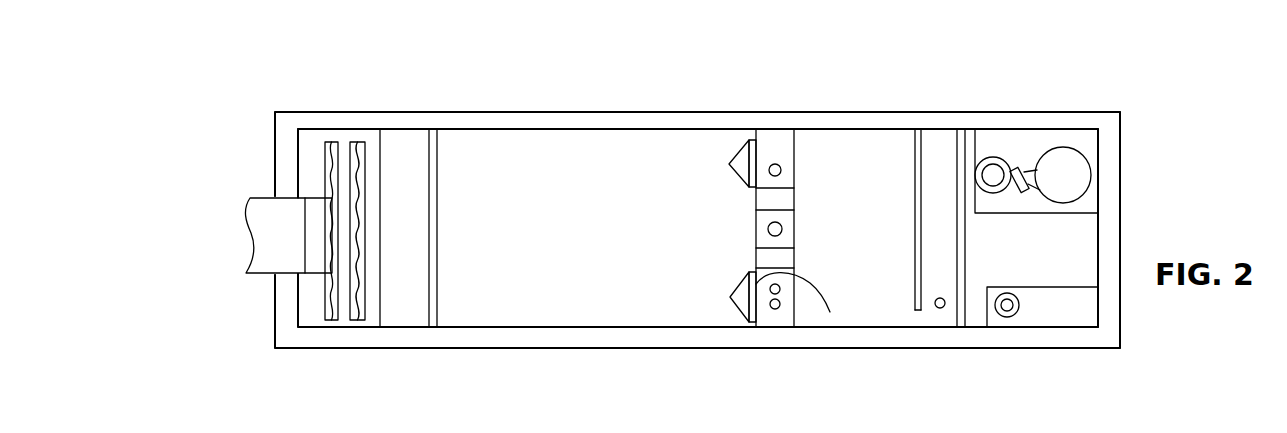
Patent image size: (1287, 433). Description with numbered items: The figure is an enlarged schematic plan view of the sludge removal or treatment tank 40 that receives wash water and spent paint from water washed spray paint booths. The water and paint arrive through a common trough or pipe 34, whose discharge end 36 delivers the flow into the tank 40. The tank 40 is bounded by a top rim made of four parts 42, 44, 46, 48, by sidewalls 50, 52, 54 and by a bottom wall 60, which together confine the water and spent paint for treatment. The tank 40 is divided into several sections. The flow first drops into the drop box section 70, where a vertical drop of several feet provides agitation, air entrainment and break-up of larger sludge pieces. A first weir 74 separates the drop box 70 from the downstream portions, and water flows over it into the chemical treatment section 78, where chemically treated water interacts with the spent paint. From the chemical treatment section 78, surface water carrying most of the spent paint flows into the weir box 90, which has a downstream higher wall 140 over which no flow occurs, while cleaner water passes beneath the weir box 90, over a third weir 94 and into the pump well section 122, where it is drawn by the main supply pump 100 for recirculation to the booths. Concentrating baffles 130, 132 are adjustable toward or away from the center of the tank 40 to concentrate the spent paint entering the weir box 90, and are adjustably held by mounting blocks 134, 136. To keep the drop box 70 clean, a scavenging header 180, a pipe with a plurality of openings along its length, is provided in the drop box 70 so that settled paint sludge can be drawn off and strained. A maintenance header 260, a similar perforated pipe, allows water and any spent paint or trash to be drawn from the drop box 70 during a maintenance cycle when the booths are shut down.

The common trough or pipe 34 is at (288, 235).
The discharge end 36 is at (322, 217).
The sludge removal or treatment tank 40 is at (955, 350).
The top rim part 42 is at (292, 323).
The top rim part 44 is at (408, 343).
The top rim part 46 is at (598, 113).
The top rim part 48 is at (905, 120).
The sidewall 50 is at (274, 303).
The sidewall 52 is at (632, 349).
The sidewall 54 is at (1119, 221).
The bottom wall 60 is at (595, 227).
The drop box section 70 is at (372, 320).
The first weir 74 is at (407, 172).
The chemical treatment section 78 is at (510, 295).
The weir box 90 is at (796, 171).
The third weir 94 is at (913, 280).
The main supply pump 100 is at (1068, 168).
The pump well section 122 is at (1070, 258).
The concentrating baffle 130 is at (738, 157).
The concentrating baffle 132 is at (742, 295).
The mounting block 134 is at (753, 145).
The mounting block 136 is at (817, 292).
The downstream higher wall 140 is at (797, 218).
The scavenging header 180 is at (363, 152).
The maintenance header 260 is at (337, 320).